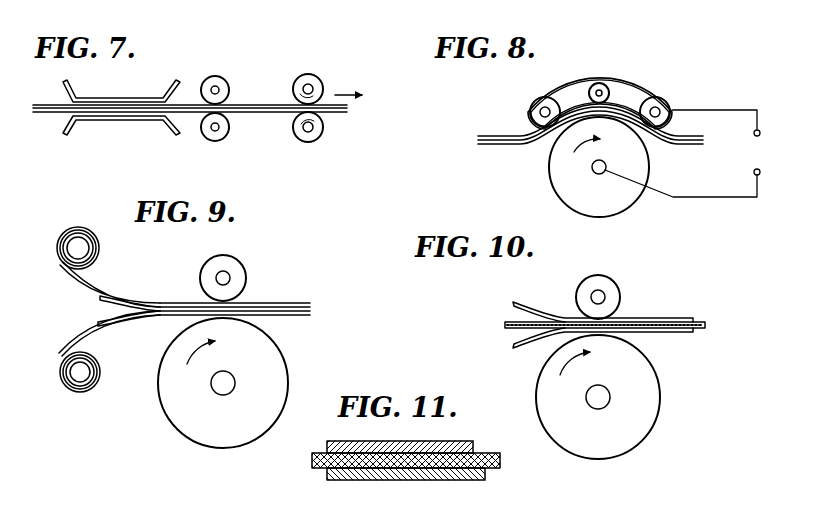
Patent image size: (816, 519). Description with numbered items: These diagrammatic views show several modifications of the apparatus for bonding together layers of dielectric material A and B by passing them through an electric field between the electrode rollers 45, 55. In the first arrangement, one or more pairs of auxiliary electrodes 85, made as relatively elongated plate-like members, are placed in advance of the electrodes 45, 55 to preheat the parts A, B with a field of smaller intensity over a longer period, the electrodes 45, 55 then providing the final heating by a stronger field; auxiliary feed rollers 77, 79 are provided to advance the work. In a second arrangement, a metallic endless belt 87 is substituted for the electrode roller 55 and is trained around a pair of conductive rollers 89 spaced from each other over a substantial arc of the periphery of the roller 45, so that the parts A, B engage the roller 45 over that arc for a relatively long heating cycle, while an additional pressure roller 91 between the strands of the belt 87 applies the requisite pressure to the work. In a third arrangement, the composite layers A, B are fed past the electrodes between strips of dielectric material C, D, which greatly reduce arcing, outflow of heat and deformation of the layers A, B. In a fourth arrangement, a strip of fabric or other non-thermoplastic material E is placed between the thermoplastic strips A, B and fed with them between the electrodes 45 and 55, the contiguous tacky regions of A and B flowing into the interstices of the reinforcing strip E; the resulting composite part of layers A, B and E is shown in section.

In FIG. 7, the electrode roller 45 is at (208, 135).
In FIG. 8, the electrode roller 45 is at (630, 200).
In FIG. 9, the electrode roller 45 is at (270, 350).
In FIG. 10, the electrode roller 45 is at (660, 398).
In FIG. 7, the electrode roller 55 is at (208, 77).
In FIG. 9, the electrode roller 55 is at (245, 272).
In FIG. 10, the electrode roller 55 is at (620, 284).
In FIG. 7, the auxiliary feed roller 77 is at (316, 76).
In FIG. 7, the auxiliary feed roller 79 is at (320, 138).
In FIG. 7, the auxiliary electrodes 85 is at (62, 84).
In FIG. 8, the metallic endless belt 87 is at (632, 81).
In FIG. 8, the conductive rollers 89 is at (528, 112).
In FIG. 8, the pressure roller 91 is at (586, 86).
In FIG. 7, the layer of dielectric material A is at (268, 104).
In FIG. 8, the layer of dielectric material A is at (478, 135).
In FIG. 9, the layer of dielectric material A is at (100, 300).
In FIG. 10, the layer of dielectric material A is at (530, 308).
In FIG. 11, the layer of dielectric material A is at (460, 442).
In FIG. 7, the layer of dielectric material B is at (276, 114).
In FIG. 8, the layer of dielectric material B is at (490, 147).
In FIG. 9, the layer of dielectric material B is at (98, 322).
In FIG. 10, the layer of dielectric material B is at (525, 346).
In FIG. 11, the layer of dielectric material B is at (440, 480).
In FIG. 9, the strip of dielectric material C is at (103, 285).
In FIG. 9, the strip of dielectric material D is at (103, 343).
In FIG. 10, the reinforcing strip E is at (510, 322).
In FIG. 11, the reinforcing strip E is at (500, 464).